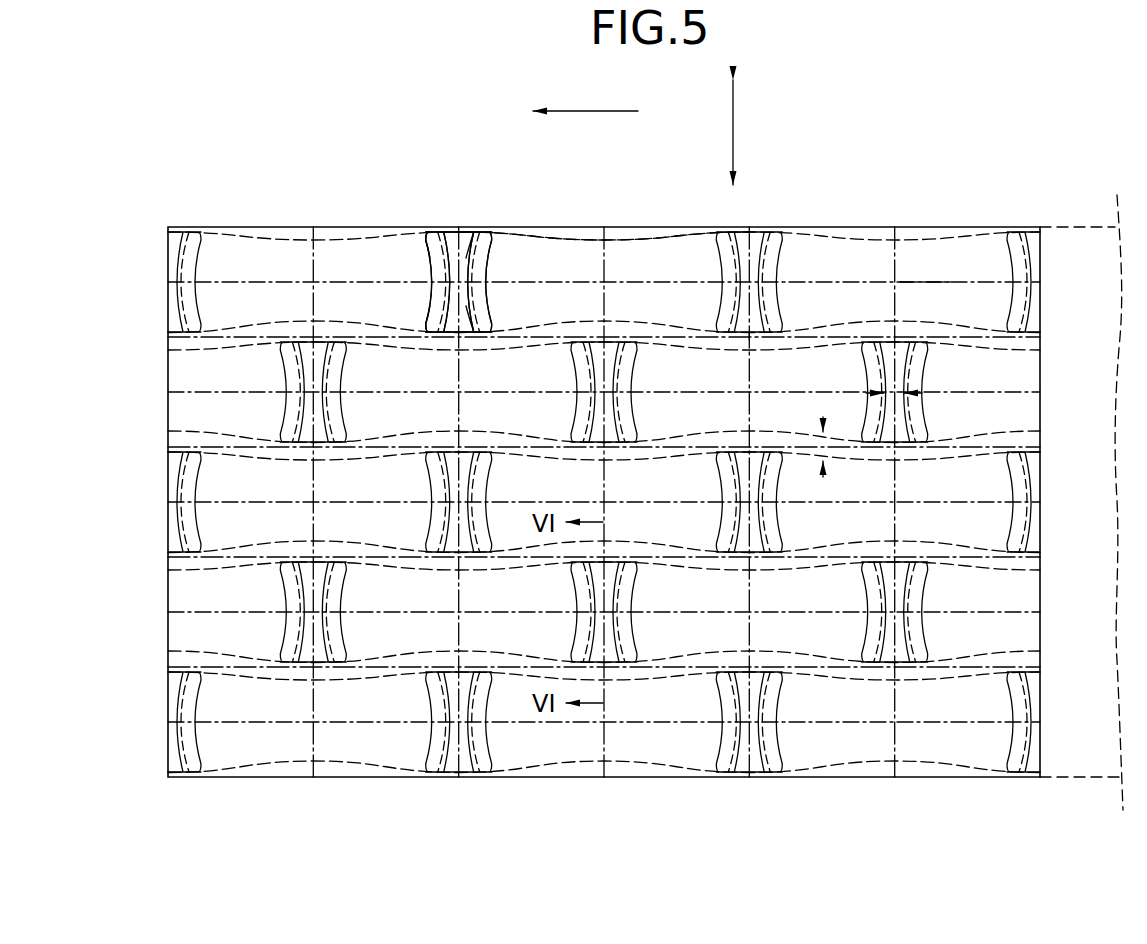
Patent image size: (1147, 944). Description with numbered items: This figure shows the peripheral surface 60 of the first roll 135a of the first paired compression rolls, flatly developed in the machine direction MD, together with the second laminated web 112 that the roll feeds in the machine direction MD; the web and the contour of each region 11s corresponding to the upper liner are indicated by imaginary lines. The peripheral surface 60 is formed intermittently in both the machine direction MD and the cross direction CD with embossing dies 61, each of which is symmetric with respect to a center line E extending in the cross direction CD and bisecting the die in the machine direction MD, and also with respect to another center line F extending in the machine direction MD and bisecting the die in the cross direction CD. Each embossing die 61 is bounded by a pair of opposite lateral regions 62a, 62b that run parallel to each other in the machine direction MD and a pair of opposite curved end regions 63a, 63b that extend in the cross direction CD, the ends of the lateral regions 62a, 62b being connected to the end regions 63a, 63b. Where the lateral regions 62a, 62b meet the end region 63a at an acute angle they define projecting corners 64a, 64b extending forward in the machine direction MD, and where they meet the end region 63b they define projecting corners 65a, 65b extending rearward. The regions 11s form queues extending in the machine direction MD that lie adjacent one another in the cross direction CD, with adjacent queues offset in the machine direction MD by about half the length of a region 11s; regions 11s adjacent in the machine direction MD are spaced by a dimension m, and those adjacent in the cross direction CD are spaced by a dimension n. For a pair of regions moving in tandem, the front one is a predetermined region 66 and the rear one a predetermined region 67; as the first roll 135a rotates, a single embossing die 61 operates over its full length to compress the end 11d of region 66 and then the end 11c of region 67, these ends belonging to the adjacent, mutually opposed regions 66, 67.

The peripheral surface 60 is at (329, 226).
The embossing die 61 is at (450, 230).
The lateral region 62a is at (467, 334).
The lateral region 62b is at (467, 231).
The end region 63a is at (428, 261).
The end region 63b is at (492, 261).
The projecting corner 64a is at (432, 322).
The projecting corner 64b is at (425, 233).
The projecting corner 65a is at (485, 323).
The projecting corner 65b is at (490, 233).
The predetermined region 66 is at (248, 236).
The predetermined region 67 is at (635, 240).
The end 11c is at (480, 296).
The end 11d is at (442, 296).
The region 11s is at (930, 238).
The second laminated web 112 is at (1093, 226).
The first roll 135a is at (813, 180).
The center line E is at (752, 310).
The center line F is at (923, 282).
The dimension m is at (907, 396).
The dimension n is at (826, 458).
The machine direction MD is at (587, 111).
The cross direction CD is at (733, 127).